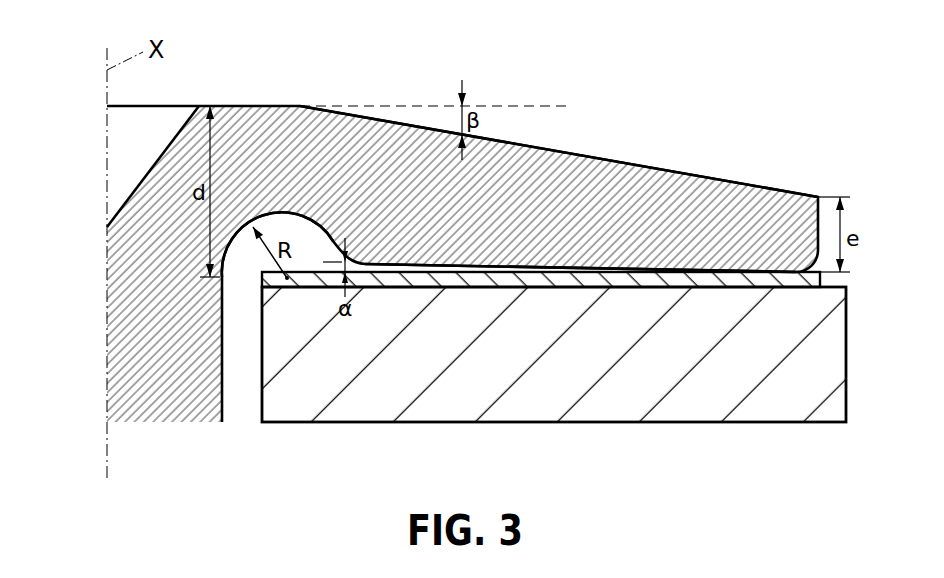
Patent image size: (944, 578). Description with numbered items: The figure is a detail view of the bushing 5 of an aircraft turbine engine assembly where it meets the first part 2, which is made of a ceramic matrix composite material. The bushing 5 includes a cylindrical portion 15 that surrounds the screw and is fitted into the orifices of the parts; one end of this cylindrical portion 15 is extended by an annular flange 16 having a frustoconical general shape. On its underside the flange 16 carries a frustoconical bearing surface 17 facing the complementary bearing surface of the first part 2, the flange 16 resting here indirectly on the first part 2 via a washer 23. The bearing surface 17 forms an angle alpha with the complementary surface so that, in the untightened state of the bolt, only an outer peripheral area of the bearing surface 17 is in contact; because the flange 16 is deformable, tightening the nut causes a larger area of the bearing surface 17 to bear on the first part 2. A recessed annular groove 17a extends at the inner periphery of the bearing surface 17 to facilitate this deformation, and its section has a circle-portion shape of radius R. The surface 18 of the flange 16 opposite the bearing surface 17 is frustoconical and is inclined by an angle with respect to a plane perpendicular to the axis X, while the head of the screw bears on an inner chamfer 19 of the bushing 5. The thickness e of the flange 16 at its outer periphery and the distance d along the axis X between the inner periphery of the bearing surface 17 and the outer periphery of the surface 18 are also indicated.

The first part 2 is at (828, 345).
The bushing 5 is at (462, 304).
The cylindrical portion 15 is at (160, 400).
The annular flange 16 is at (693, 210).
The bearing surface 17 is at (522, 267).
The recessed annular groove 17a is at (277, 217).
The surface 18 is at (645, 163).
The inner chamfer 19 is at (152, 168).
The washer 23 is at (642, 280).